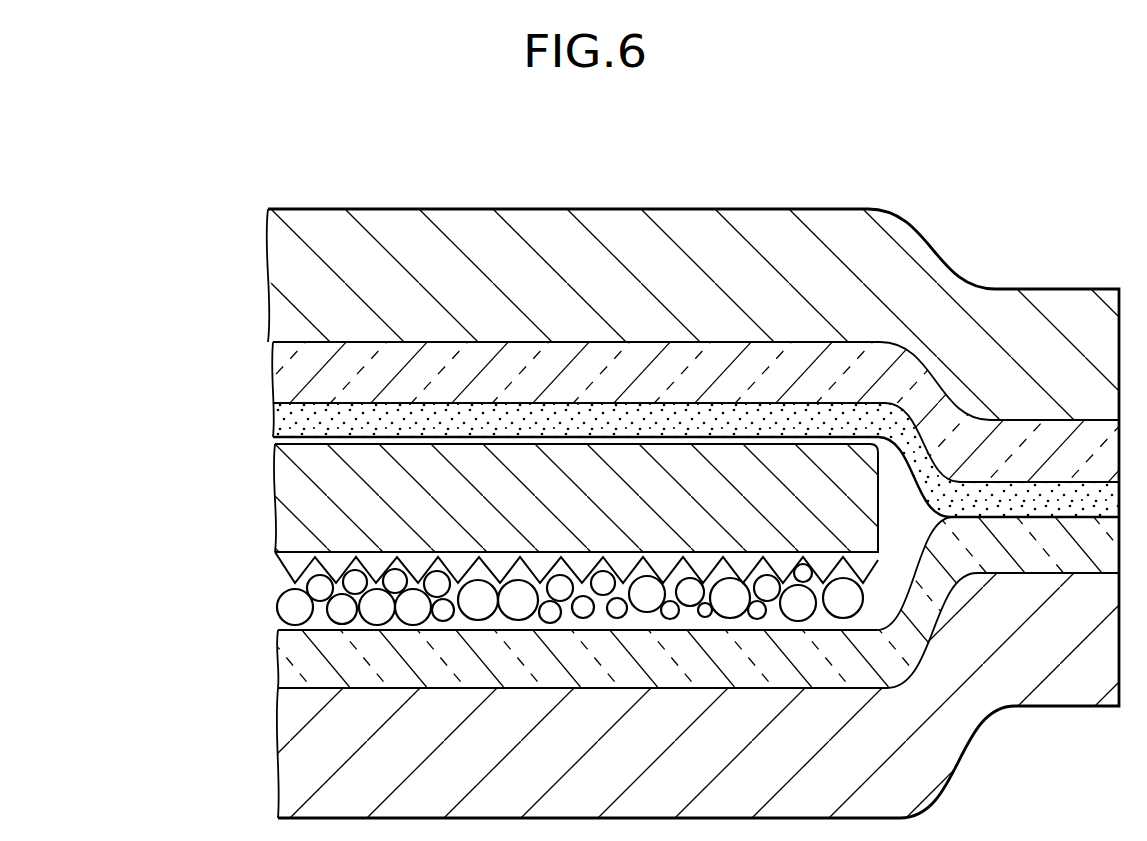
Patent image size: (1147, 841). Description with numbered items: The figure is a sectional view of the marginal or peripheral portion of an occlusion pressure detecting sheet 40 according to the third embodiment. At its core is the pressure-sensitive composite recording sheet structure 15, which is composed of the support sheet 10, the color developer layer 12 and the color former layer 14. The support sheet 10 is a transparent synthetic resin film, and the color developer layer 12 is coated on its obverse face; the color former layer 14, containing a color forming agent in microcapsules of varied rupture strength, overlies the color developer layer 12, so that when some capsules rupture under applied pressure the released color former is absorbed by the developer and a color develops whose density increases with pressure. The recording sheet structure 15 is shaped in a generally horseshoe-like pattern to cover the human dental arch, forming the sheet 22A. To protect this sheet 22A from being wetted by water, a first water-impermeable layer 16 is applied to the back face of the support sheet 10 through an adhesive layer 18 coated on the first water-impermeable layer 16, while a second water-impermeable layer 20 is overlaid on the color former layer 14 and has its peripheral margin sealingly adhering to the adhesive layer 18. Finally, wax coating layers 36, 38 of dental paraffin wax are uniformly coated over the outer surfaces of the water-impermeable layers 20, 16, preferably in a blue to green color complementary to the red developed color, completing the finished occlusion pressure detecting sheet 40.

The occlusion pressure detecting sheet 40 is at (291, 182).
The wax coating layer 38 is at (266, 300).
The wax coating layer 36 is at (278, 749).
The occlusion pressure detecting sheet 22A is at (160, 343).
The first water-impermeable layer 16 is at (273, 362).
The adhesive layer 18 is at (274, 420).
The pressure-sensitive composite recording sheet structure 15 is at (213, 462).
The support sheet 10 is at (281, 487).
The color developer layer 12 is at (288, 566).
The color former layer 14 is at (278, 610).
The second water-impermeable layer 20 is at (277, 669).